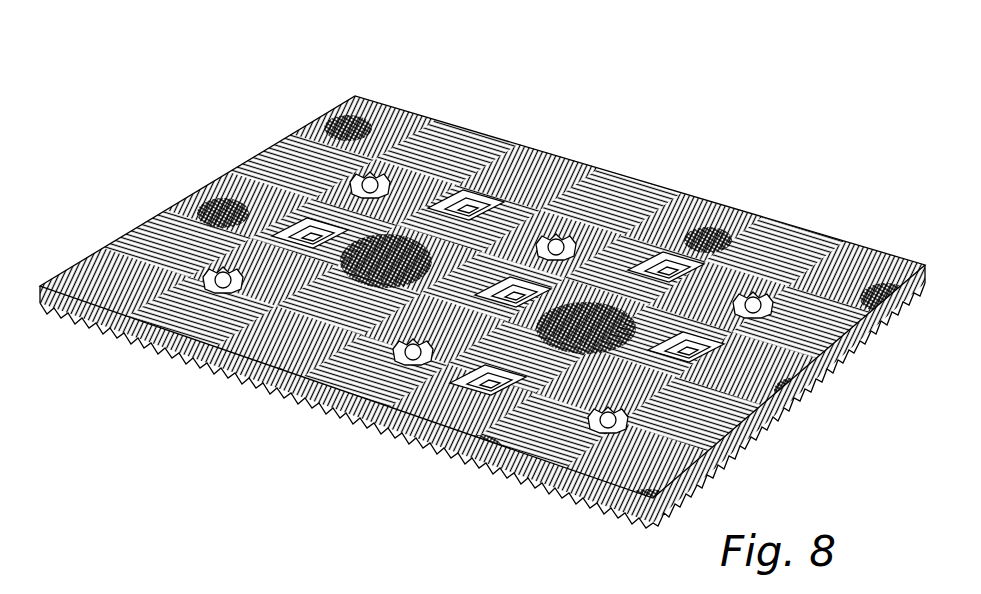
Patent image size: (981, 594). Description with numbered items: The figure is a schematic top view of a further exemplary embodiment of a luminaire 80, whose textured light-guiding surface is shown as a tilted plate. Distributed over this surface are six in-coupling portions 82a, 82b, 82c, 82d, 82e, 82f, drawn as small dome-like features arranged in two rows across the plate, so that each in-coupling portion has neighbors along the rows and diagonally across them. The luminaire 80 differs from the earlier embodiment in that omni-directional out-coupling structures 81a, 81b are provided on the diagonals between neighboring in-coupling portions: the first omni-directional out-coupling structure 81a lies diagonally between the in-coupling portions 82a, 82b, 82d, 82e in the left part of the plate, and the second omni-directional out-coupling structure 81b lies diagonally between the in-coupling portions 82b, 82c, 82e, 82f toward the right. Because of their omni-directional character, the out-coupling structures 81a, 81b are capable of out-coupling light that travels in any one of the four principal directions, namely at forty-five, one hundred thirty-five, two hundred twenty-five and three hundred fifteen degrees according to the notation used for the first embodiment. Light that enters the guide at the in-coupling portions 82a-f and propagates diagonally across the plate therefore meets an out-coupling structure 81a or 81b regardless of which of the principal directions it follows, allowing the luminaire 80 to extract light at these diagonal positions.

The luminaire 80 is at (717, 136).
The omni-directional out-coupling structure 81a is at (365, 245).
The omni-directional out-coupling structure 81b is at (627, 327).
The in-coupling portion 82a is at (366, 170).
The in-coupling portion 82b is at (552, 233).
The in-coupling portion 82c is at (752, 290).
The in-coupling portion 82d is at (212, 266).
The in-coupling portion 82e is at (398, 352).
The in-coupling portion 82f is at (597, 421).